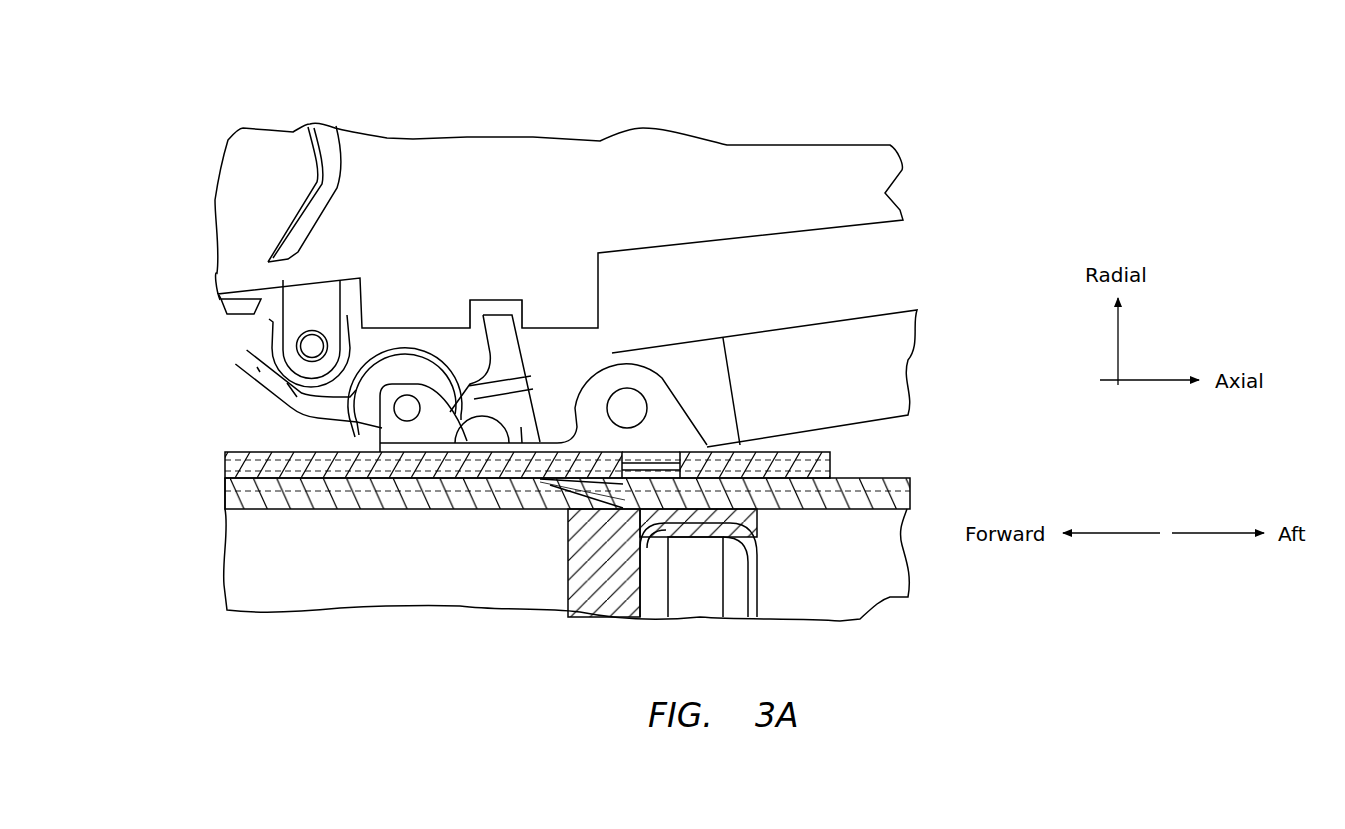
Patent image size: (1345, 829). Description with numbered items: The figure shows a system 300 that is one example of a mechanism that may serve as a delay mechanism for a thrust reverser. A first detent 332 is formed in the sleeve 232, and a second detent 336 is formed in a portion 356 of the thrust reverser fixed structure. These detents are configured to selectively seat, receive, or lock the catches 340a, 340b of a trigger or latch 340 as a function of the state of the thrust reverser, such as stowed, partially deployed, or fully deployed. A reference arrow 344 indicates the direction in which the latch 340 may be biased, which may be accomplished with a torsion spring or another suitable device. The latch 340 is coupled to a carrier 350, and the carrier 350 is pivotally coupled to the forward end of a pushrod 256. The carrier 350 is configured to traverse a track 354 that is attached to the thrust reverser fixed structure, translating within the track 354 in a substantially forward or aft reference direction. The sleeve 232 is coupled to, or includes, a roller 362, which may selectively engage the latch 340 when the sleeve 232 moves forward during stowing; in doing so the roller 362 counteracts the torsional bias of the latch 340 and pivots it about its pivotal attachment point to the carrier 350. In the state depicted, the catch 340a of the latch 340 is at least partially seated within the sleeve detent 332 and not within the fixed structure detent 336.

The sleeve 232 is at (460, 155).
The first detent 332 is at (505, 294).
The catch 340a is at (500, 338).
The reference arrow 344 is at (407, 349).
The carrier 350 is at (660, 410).
The roller 362 is at (271, 335).
The latch 340 is at (258, 379).
The pushrod 256 is at (880, 357).
The track 354 is at (832, 462).
The portion of the thrust reverser fixed structure 356 is at (368, 500).
The catch 340b is at (547, 458).
The second detent 336 is at (694, 520).
The system 300 is at (1062, 168).